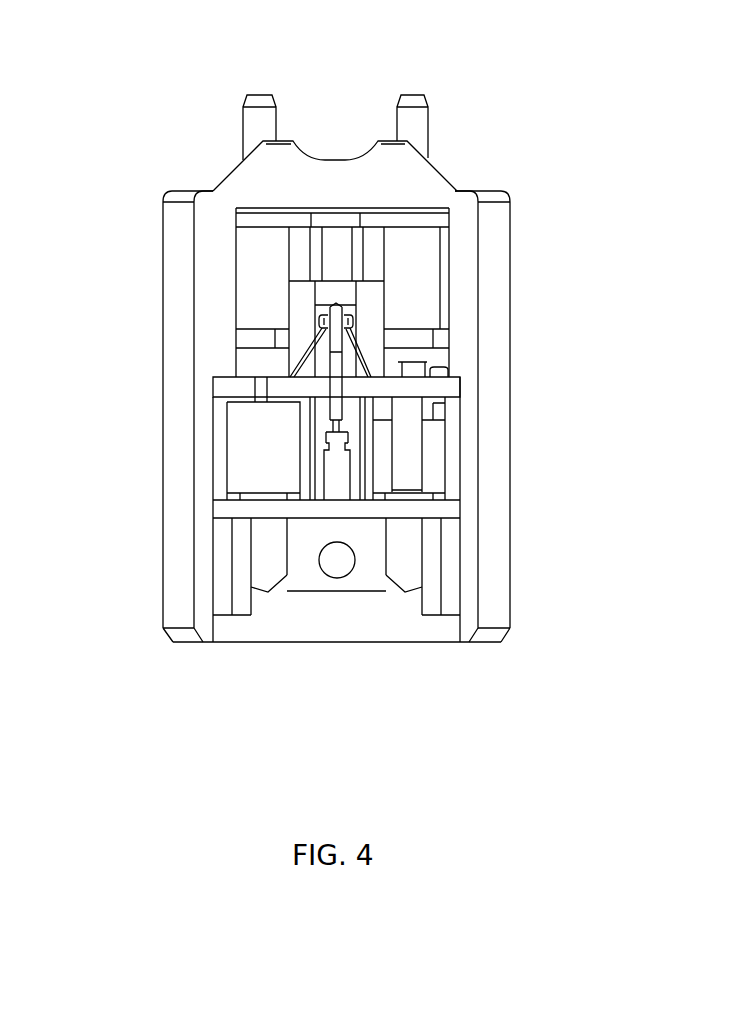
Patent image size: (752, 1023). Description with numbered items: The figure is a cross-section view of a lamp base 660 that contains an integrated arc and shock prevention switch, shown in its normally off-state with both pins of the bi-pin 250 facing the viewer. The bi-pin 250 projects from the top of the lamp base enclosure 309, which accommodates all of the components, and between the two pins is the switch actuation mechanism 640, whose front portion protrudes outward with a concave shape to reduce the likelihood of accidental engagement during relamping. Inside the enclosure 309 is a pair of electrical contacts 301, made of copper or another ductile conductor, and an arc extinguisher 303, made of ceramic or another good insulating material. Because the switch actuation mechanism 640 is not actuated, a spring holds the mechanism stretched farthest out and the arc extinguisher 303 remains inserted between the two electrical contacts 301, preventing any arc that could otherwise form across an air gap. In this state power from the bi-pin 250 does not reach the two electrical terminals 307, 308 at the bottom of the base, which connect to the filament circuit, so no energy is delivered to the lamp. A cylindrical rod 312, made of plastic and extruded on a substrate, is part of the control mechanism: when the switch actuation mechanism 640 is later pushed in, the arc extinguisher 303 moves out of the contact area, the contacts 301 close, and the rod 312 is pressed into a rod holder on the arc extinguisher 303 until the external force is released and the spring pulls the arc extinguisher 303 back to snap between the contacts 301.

The bi-pin 250 is at (422, 90).
The switch actuation mechanism 640 is at (357, 164).
The lamp base 660 is at (493, 160).
The electrical contacts 301 is at (320, 322).
The arc extinguisher 303 is at (335, 368).
The lamp base enclosure 309 is at (500, 425).
The cylindrical rod 312 is at (335, 483).
The electrical terminal 308 is at (263, 575).
The electrical terminal 307 is at (402, 578).